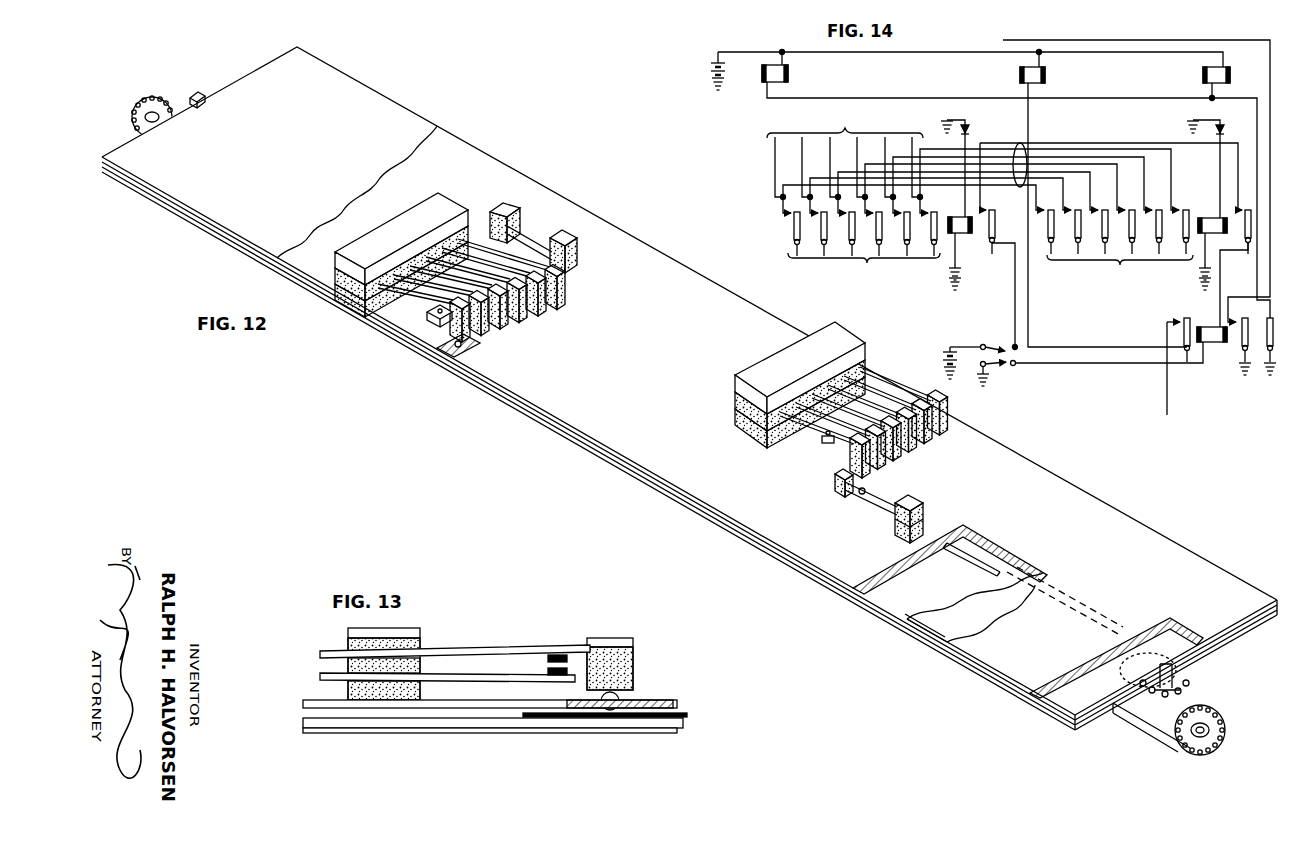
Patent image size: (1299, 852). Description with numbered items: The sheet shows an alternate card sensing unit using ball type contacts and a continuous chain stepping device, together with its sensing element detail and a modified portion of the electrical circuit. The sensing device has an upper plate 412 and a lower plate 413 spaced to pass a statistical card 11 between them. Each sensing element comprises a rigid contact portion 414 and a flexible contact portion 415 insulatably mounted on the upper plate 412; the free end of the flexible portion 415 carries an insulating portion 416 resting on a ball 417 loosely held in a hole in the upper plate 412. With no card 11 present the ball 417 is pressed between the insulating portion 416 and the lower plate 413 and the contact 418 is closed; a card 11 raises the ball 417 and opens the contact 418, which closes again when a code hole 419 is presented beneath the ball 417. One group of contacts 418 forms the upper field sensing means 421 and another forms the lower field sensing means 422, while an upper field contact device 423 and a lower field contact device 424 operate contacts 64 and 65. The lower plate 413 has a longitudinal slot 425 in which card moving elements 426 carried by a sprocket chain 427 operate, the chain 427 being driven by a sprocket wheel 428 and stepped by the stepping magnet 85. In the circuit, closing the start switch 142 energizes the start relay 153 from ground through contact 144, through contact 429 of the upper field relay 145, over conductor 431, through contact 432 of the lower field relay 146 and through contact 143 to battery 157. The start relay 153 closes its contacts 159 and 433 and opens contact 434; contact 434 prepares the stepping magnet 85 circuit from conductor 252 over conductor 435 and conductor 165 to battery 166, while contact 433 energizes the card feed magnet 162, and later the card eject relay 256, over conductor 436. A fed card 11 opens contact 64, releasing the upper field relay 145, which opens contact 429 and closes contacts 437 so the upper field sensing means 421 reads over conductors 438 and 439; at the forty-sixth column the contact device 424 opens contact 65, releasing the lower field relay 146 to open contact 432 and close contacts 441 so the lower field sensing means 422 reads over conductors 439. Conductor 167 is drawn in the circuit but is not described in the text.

In FIG. 12, the statistical card 11 is at (933, 633).
In FIG. 13, the statistical card 11 is at (686, 724).
In FIG. 12, the upper plate 412 is at (813, 560).
In FIG. 13, the upper plate 412 is at (677, 703).
In FIG. 12, the lower plate 413 is at (873, 607).
In FIG. 13, the lower plate 413 is at (660, 734).
In FIG. 13, the rigid contact portion 414 is at (447, 682).
In FIG. 13, the flexible contact portion 415 is at (445, 650).
In FIG. 13, the insulating portion 416 is at (634, 665).
In FIG. 12, the ball 417 is at (458, 348).
In FIG. 13, the ball 417 is at (620, 697).
In FIG. 12, the contact 418 is at (432, 318).
In FIG. 13, the contact 418 is at (548, 659).
In FIG. 13, the code hole 419 is at (648, 720).
In FIG. 12, the upper field sensing means 421 is at (910, 456).
In FIG. 12, the lower field sensing means 422 is at (524, 328).
In FIG. 12, the upper field contact device 423 is at (838, 492).
In FIG. 12, the lower field contact device 424 is at (558, 278).
In FIG. 12, the longitudinal slot 425 is at (985, 543).
In FIG. 12, the card moving elements 426 is at (1178, 672).
In FIG. 12, the sprocket chain 427 is at (1117, 725).
In FIG. 12, the sprocket wheel 428 is at (142, 102).
In FIG. 12, the contact 64 is at (876, 501).
In FIG. 14, the contact 64 is at (1224, 130).
In FIG. 12, the lower field contact 65 is at (535, 240).
In FIG. 14, the lower field contact 65 is at (970, 130).
In FIG. 14, the stepping magnet 85 is at (1046, 74).
In FIG. 14, the start switch 142 is at (976, 354).
In FIG. 14, the contact 143 is at (1010, 344).
In FIG. 14, the contact 144 is at (1015, 366).
In FIG. 14, the upper field relay 145 is at (1207, 218).
In FIG. 14, the lower field relay 146 is at (962, 234).
In FIG. 14, the start relay 153 is at (1207, 327).
In FIG. 14, the battery 157 is at (948, 346).
In FIG. 14, the contact 159 is at (1262, 300).
In FIG. 14, the card feed magnet 162 is at (1203, 75).
In FIG. 14, the conductor 165 is at (1002, 55).
In FIG. 14, the battery 166 is at (710, 72).
In FIG. 14, the conductor 167 is at (1012, 26).
In FIG. 14, the conductor 252 is at (1168, 405).
In FIG. 14, the card eject relay 256 is at (790, 73).
In FIG. 14, the contact 429 is at (1245, 206).
In FIG. 14, the conductor 431 is at (1126, 142).
In FIG. 14, the contact 432 is at (998, 198).
In FIG. 14, the contact 433 is at (1205, 343).
In FIG. 14, the contact 434 is at (1182, 316).
In FIG. 14, the conductor 435 is at (1095, 346).
In FIG. 14, the conductor 436 is at (1262, 290).
In FIG. 14, the contacts 437 is at (1120, 267).
In FIG. 14, the conductors 438 is at (1018, 143).
In FIG. 14, the conductors 439 is at (845, 126).
In FIG. 14, the contacts 441 is at (867, 265).